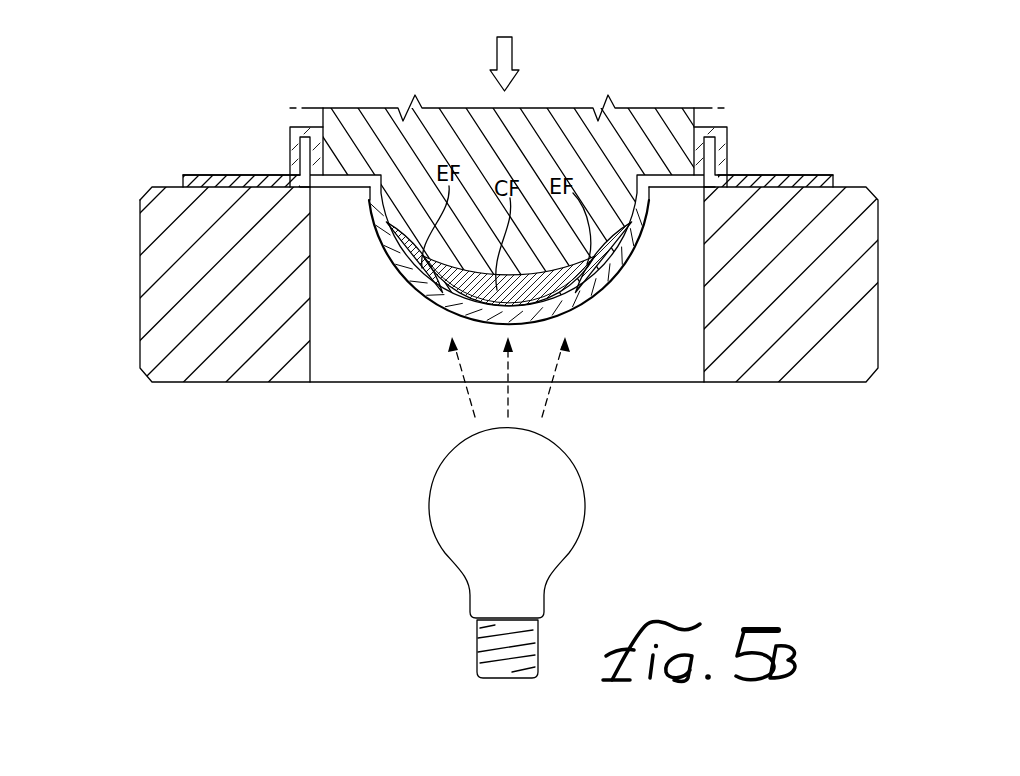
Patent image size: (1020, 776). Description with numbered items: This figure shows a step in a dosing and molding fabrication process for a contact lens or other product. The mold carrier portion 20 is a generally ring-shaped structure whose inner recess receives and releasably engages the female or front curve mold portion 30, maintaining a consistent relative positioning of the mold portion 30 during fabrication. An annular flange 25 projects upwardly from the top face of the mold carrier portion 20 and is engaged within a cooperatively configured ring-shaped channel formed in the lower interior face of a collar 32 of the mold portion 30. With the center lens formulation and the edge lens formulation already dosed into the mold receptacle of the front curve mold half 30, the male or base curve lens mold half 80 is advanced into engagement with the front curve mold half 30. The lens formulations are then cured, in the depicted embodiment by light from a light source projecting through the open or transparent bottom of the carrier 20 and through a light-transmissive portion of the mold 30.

The mold carrier portion 20 is at (172, 281).
The annular flange 25 is at (303, 150).
The front curve mold portion 30 is at (608, 280).
The collar 32 is at (725, 137).
The base curve lens mold half 80 is at (513, 128).